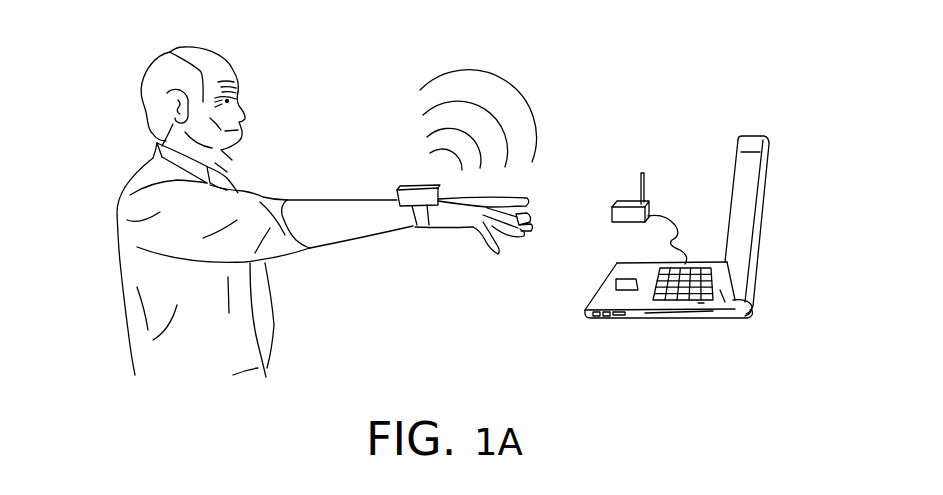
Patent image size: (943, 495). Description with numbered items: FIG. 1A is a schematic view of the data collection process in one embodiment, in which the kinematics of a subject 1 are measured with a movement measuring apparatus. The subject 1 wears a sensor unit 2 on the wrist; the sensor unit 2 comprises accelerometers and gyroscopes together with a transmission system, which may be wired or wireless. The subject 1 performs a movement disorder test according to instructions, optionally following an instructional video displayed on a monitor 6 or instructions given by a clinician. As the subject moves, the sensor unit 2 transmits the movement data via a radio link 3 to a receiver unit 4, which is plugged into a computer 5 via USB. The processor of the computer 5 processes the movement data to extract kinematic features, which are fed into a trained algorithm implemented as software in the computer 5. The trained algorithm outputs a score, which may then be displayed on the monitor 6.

The subject 1 is at (120, 173).
The sensor unit 2 is at (395, 187).
The radio link 3 is at (518, 88).
The receiver unit 4 is at (652, 198).
The computer 5 is at (653, 325).
The monitor 6 is at (760, 140).